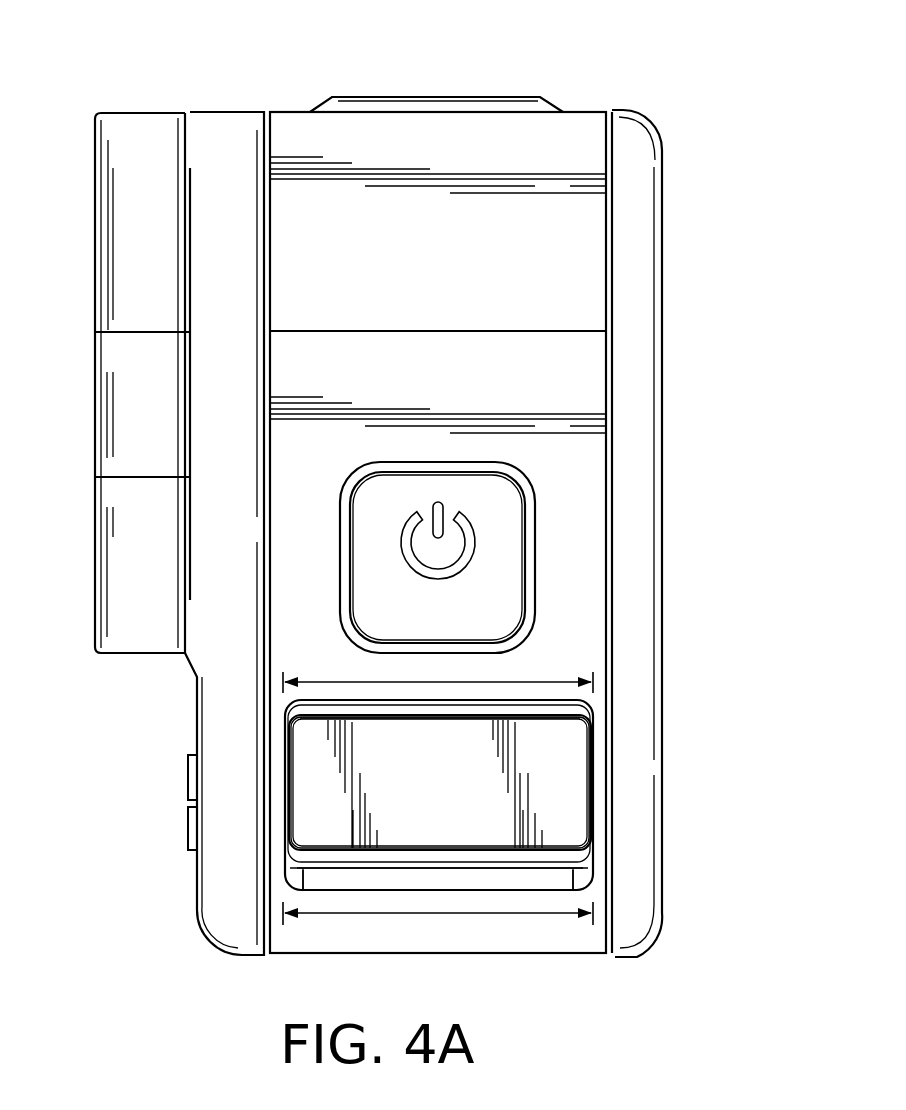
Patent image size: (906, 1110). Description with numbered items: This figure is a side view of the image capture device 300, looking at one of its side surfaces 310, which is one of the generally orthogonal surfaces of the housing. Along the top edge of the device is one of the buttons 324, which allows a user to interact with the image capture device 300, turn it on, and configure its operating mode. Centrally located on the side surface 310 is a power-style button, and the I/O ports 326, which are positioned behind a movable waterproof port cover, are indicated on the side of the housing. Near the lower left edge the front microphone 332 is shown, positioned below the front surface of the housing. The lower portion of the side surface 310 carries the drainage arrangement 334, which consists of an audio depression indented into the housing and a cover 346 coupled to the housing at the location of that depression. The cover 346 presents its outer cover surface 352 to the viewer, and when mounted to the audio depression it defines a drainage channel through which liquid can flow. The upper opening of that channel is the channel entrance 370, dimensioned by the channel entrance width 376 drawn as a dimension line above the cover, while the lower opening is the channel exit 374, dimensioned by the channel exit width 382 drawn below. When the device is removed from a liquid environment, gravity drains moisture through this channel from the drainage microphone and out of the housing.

The image capture device 300 is at (668, 60).
The side surface 310 is at (520, 229).
The buttons 324 is at (384, 95).
The I/O ports 326 is at (487, 562).
The front microphone 332 is at (180, 817).
The drainage arrangement 334 is at (294, 766).
The cover 346 is at (568, 737).
The outer cover surface 352 is at (565, 820).
The channel entrance 370 is at (522, 711).
The channel exit 374 is at (283, 877).
The channel entrance width 376 is at (540, 677).
The channel exit width 382 is at (520, 915).